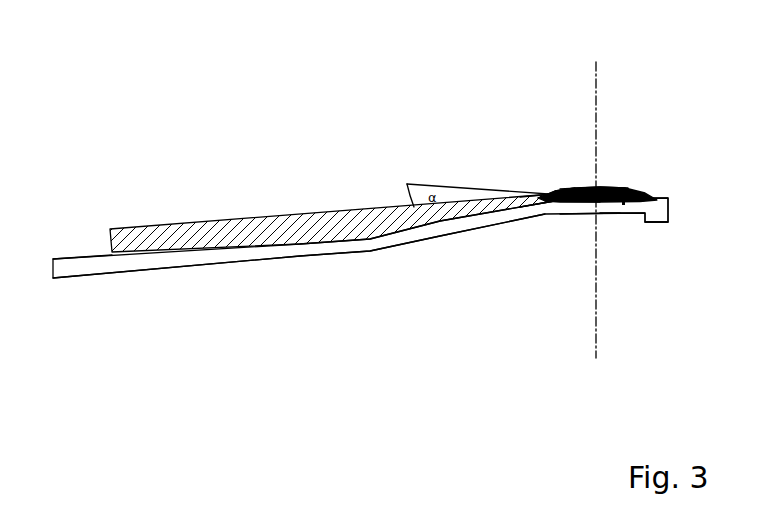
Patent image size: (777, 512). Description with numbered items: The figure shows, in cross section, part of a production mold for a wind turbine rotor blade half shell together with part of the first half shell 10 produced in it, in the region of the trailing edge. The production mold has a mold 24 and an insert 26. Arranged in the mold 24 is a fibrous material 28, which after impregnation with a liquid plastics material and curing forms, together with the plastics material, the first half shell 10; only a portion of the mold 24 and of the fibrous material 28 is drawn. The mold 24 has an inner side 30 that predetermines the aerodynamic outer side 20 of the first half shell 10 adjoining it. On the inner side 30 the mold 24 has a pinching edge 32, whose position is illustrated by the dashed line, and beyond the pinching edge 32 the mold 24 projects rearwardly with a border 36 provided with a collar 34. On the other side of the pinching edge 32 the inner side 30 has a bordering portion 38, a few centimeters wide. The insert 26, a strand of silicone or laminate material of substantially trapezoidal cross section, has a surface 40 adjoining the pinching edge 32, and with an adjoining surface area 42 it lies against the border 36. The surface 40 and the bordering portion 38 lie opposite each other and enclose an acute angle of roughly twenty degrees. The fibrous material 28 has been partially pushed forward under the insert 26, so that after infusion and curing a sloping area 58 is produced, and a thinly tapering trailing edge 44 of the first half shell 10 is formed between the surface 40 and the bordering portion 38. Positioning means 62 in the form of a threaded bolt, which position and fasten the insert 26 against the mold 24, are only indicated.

The first half shell 10 is at (336, 194).
The outer side 20 is at (283, 242).
The mold 24 is at (220, 263).
The insert 26 is at (605, 187).
The fibrous material 28 is at (228, 229).
The inner side 30 is at (92, 256).
The pinching edge 32 is at (589, 213).
The collar 34 is at (669, 206).
The border 36 is at (634, 213).
The bordering portion 38 is at (567, 187).
The surface 40 is at (531, 212).
The surface area 42 is at (618, 206).
The trailing edge 44 is at (550, 188).
The sloping area 58 is at (555, 202).
The positioning means 62 is at (630, 188).